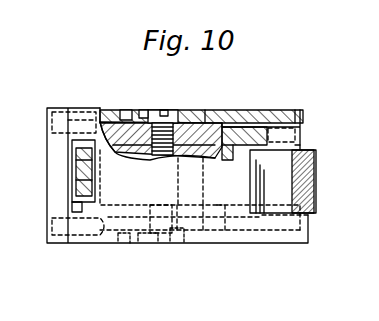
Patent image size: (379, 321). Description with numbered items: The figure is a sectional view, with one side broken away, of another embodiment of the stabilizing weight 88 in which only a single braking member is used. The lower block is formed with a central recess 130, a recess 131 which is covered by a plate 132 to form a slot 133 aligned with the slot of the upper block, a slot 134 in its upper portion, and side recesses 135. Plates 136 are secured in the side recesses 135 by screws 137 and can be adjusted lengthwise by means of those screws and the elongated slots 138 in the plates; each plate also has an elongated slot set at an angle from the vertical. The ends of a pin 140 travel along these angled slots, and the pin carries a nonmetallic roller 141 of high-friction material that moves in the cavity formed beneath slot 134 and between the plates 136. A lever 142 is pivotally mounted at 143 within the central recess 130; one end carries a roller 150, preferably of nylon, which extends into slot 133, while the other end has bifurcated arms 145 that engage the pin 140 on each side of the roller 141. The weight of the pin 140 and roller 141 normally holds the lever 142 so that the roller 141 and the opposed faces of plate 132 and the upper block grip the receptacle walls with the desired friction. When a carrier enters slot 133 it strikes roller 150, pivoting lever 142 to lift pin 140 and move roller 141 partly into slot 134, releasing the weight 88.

The stabilizing weight 88 is at (80, 105).
The central recess 130 is at (111, 155).
The recess 131 is at (82, 205).
The plate 132 is at (56, 172).
The slot 133 is at (72, 143).
The slot 134 is at (250, 168).
The side recesses 135 is at (125, 110).
The plates 136 is at (216, 123).
The screws 137 is at (160, 110).
The elongated slots 138 is at (143, 109).
The pin 140 is at (292, 148).
The nonmetallic roller 141 is at (319, 165).
The lever 142 is at (160, 198).
The pivot 143 is at (208, 109).
The bifurcated arms 145 is at (254, 132).
The roller 150 is at (72, 178).